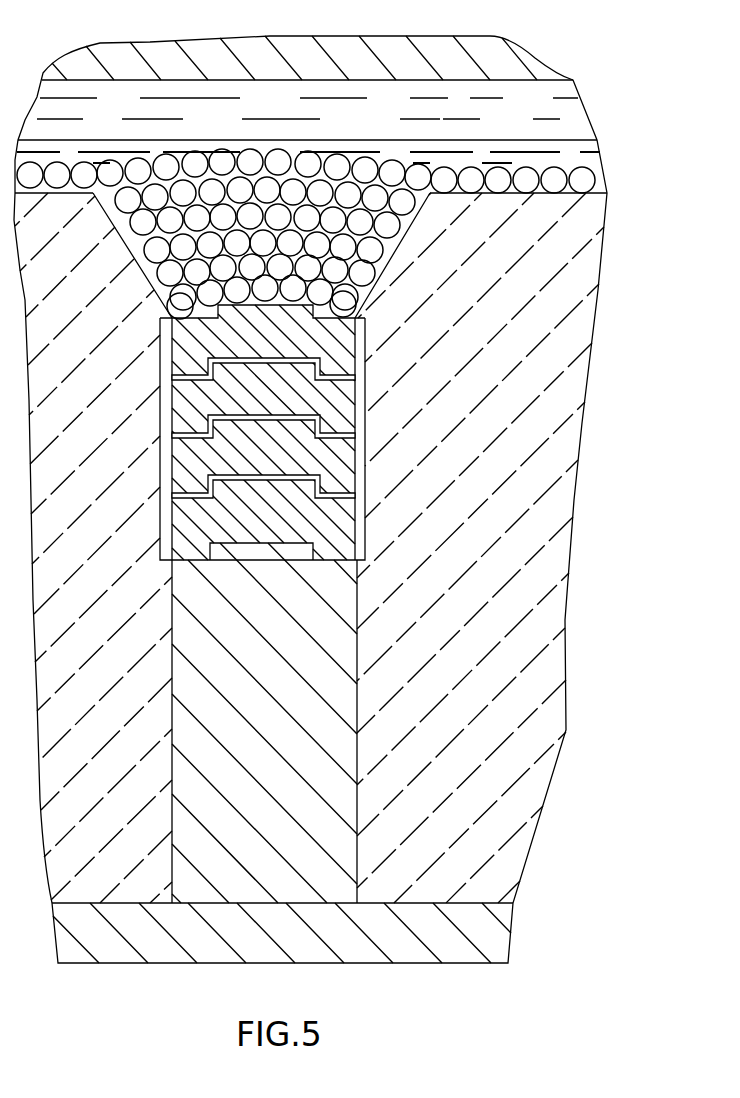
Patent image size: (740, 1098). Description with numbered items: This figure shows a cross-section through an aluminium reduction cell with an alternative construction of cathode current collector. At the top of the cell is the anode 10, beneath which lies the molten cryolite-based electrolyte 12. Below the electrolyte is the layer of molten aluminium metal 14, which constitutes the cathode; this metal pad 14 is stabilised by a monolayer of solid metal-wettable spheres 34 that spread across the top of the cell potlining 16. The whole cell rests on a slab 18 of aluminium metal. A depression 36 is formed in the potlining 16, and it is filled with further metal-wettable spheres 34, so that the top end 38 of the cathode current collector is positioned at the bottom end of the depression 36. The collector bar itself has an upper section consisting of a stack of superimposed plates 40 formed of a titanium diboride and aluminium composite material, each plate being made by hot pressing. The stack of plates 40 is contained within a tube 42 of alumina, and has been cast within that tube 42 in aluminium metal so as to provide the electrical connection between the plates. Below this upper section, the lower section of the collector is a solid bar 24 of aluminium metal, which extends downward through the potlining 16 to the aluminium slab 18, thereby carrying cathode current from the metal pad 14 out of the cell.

The anode 10 is at (517, 58).
The molten cryolite-based electrolyte 12 is at (572, 125).
The layer of molten aluminium metal 14 is at (413, 152).
The cell potlining 16 is at (567, 304).
The slab of aluminium metal 18 is at (470, 907).
The solid bar of aluminium metal 24 is at (185, 633).
The solid metal-wettable spheres 34 is at (130, 228).
The depression 36 is at (158, 299).
The top end of cathode current collector 38 is at (333, 310).
The superimposed plates 40 is at (187, 458).
The tube of Al2O3 42 is at (363, 418).